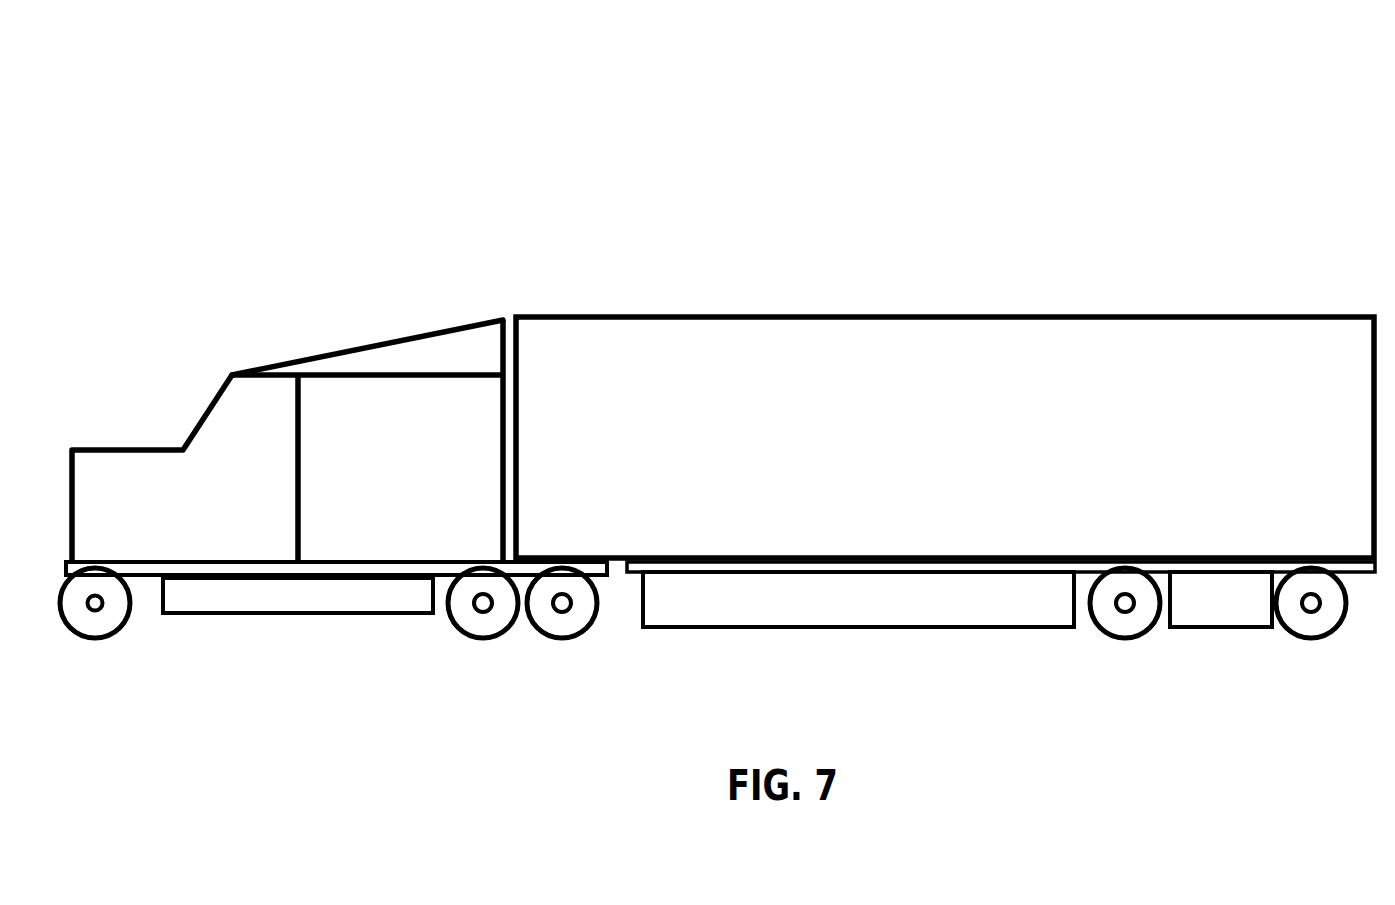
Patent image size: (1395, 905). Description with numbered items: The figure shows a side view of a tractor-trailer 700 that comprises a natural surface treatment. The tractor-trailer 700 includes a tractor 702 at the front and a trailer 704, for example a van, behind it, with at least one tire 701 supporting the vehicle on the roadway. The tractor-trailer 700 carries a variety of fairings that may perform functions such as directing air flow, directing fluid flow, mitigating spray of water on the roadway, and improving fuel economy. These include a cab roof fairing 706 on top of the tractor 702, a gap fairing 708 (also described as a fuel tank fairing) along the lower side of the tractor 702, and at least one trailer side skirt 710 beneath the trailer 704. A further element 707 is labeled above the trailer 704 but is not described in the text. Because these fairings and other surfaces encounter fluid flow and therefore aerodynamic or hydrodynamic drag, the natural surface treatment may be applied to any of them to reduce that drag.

The tractor-trailer 700 is at (688, 236).
The tire 701 is at (1117, 623).
The tractor 702 is at (135, 470).
The trailer 704 is at (1078, 337).
The cab roof fairing 706 is at (432, 362).
The roof-mounted component 707 is at (803, 123).
The gap fairing 708 is at (297, 600).
The trailer side skirt 710 is at (1000, 600).